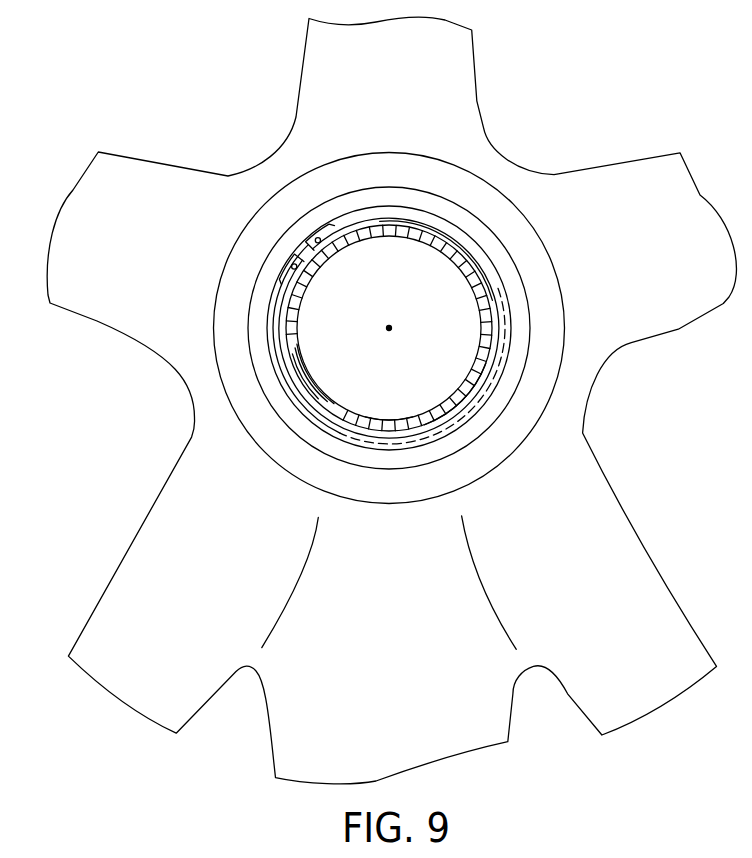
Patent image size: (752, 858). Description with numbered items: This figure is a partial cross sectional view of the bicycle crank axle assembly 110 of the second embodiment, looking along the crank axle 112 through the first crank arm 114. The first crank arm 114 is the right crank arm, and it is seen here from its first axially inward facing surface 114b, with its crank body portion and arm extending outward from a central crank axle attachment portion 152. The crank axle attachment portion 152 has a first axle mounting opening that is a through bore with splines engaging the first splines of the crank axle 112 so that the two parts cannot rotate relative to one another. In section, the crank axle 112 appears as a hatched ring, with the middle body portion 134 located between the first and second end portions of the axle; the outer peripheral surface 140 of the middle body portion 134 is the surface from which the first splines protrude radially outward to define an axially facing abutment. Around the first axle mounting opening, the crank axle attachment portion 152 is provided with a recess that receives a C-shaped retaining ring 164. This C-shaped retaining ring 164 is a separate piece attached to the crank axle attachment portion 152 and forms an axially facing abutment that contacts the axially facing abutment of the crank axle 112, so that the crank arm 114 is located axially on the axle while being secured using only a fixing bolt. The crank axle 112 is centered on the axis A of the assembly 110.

The bicycle crank axle assembly 110 is at (391, 398).
The first crank arm 114 is at (98, 328).
The first axially inward facing surface 114b is at (408, 613).
The crank axle attachment portion 152 is at (246, 261).
The C-shaped retaining ring 164 is at (484, 262).
The crank axle 112 is at (495, 322).
The middle body portion 134 is at (463, 407).
The outer peripheral surface 140 is at (393, 424).
The axis A is at (389, 331).